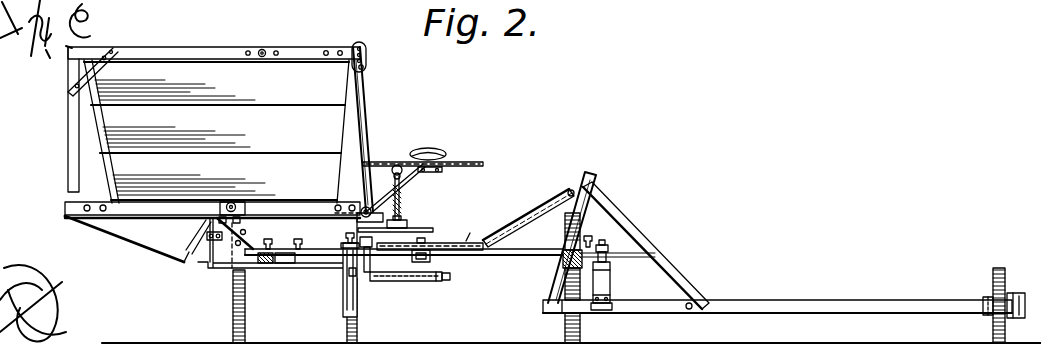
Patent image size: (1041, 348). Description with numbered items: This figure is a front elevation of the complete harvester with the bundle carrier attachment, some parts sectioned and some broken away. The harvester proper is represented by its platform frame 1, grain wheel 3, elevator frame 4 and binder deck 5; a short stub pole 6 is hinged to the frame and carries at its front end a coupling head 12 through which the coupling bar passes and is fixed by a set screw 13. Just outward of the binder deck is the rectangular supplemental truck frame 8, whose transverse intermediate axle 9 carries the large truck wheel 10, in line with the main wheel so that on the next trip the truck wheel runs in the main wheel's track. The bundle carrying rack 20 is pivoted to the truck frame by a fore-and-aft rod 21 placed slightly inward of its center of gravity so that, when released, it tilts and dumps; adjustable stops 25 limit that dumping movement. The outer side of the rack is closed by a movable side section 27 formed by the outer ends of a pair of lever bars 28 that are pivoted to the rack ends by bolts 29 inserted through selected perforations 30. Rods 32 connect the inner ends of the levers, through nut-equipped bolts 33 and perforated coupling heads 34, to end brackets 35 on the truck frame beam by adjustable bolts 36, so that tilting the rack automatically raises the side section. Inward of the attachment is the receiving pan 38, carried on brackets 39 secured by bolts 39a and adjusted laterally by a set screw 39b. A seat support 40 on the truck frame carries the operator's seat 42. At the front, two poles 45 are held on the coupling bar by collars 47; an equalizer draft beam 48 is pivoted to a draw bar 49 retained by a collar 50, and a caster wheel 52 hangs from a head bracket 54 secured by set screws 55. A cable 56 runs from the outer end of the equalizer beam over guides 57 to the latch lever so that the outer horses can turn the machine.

The platform frame 1 is at (733, 302).
The grain wheel 3 is at (1006, 276).
The elevator frame 4 is at (676, 283).
The binder deck 5 is at (547, 196).
The stub pole 6 is at (604, 288).
The supplemental truck frame 8 is at (310, 258).
The intermediate axle 9 is at (288, 268).
The truck wheel 10 is at (232, 318).
The coupling head 12 is at (647, 260).
The set screw 13 is at (607, 246).
The bundle carrying rack 20 is at (140, 192).
The rod 21 is at (238, 203).
The stops 25 is at (157, 240).
The movable side section 27 is at (72, 122).
The lever bars 28 is at (182, 48).
The bolts 29 is at (262, 62).
The perforations 30 is at (275, 50).
The rods 32 is at (366, 128).
The nut-equipped bolts 33 is at (364, 61).
The coupling heads 34 is at (347, 47).
The end brackets 35 is at (360, 213).
The bolts 36 is at (377, 184).
The receiving pan 38 is at (440, 283).
The brackets 39 is at (446, 283).
The bolts 39a is at (380, 238).
The set screw 39b is at (450, 276).
The seat support 40 is at (484, 163).
The operator's seat 42 is at (441, 151).
The poles 45 is at (265, 265).
The collars 47 is at (297, 242).
The equalizer draft beam 48 is at (466, 241).
The draw bar 49 is at (433, 245).
The collar 50 is at (414, 257).
The caster wheel 52 is at (357, 330).
The head bracket 54 is at (348, 257).
The set screws 55 is at (348, 236).
The cable 56 is at (401, 193).
The guides 57 is at (210, 242).